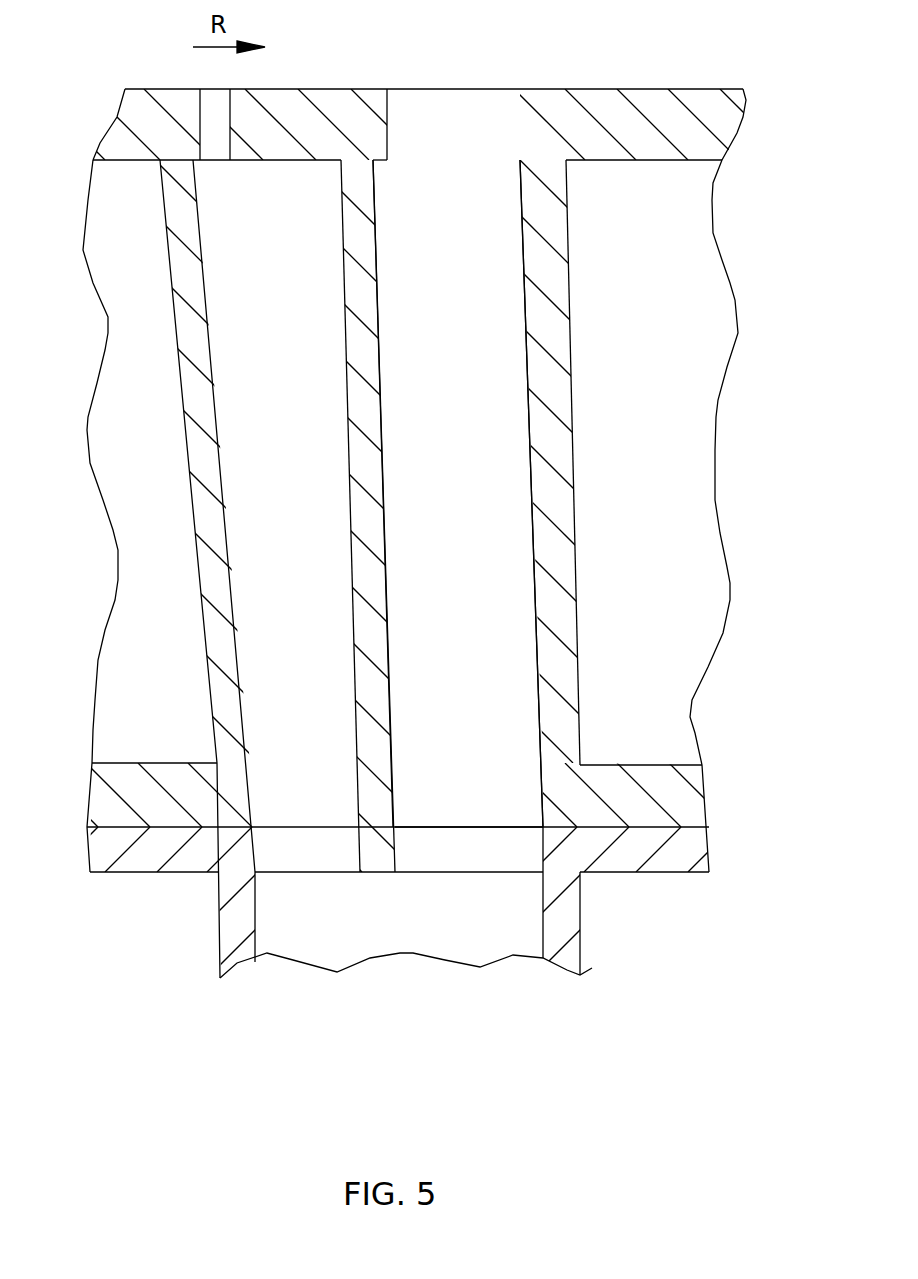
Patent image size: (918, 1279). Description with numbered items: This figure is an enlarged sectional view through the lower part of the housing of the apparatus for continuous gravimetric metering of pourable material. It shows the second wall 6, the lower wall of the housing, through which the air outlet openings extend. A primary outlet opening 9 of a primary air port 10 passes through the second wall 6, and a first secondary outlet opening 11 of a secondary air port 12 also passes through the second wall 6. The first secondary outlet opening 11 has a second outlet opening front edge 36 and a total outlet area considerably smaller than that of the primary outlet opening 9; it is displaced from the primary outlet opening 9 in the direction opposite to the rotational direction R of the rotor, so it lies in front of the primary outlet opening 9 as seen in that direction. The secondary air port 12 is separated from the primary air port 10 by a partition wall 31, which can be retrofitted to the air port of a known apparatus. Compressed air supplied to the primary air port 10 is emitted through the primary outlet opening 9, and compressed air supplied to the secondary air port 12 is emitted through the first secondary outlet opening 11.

The second wall 6 is at (713, 198).
The primary outlet opening 9 is at (455, 123).
The primary air port 10 is at (510, 633).
The first secondary outlet opening 11 is at (207, 127).
The secondary air port 12 is at (250, 462).
The partition wall 31 is at (365, 743).
The second outlet opening front edge 36 is at (200, 113).